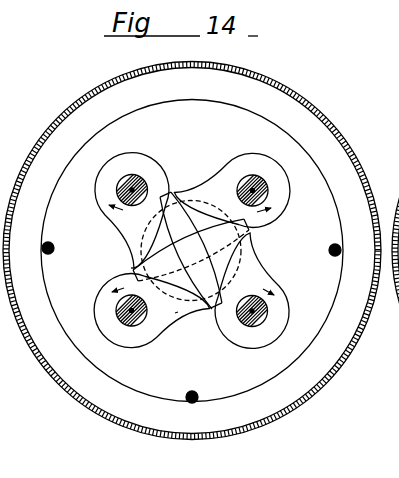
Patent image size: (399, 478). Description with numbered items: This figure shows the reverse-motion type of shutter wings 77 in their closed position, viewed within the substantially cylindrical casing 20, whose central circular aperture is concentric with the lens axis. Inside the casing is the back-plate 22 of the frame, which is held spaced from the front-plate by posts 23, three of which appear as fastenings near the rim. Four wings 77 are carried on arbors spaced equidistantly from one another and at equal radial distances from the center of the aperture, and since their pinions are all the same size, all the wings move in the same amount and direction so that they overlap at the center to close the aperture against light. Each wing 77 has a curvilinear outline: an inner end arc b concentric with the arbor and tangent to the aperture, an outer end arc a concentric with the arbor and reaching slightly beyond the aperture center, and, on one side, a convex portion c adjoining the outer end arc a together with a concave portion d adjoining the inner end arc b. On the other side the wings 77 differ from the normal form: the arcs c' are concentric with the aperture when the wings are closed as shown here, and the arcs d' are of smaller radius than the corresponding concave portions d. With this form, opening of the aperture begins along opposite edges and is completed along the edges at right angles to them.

The casing 20 is at (328, 124).
The back-plate 22 is at (319, 191).
The posts 23 is at (341, 249).
The wings 77 is at (131, 161).
The outer end arc a is at (213, 260).
The inner end arc b is at (100, 334).
The convex portion c is at (191, 250).
The arcs c' is at (206, 318).
The concave portion d is at (122, 263).
The arcs d' is at (182, 325).